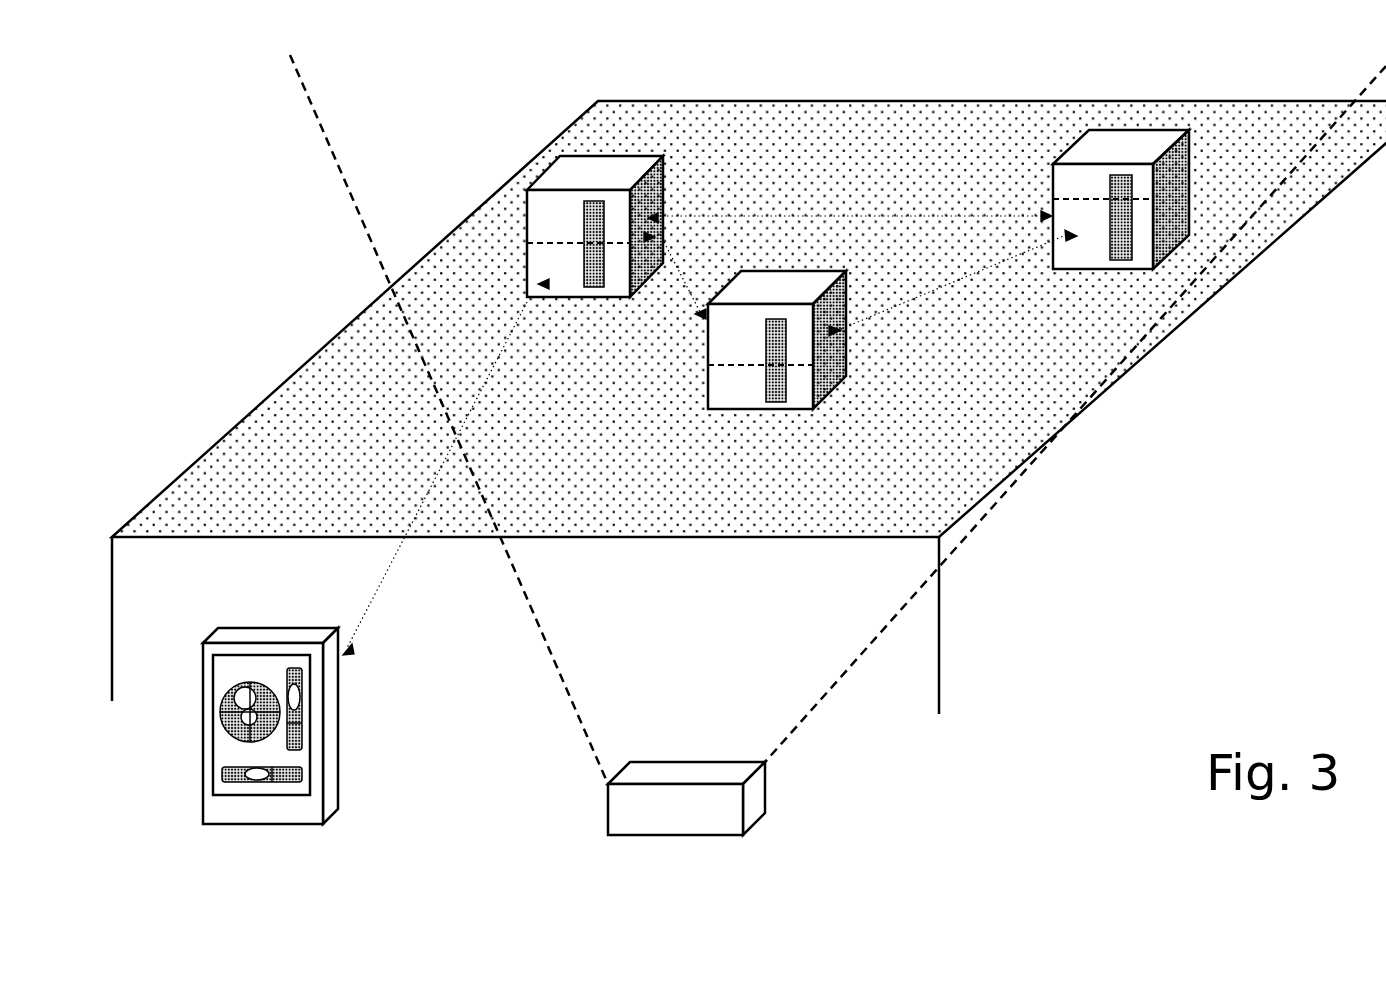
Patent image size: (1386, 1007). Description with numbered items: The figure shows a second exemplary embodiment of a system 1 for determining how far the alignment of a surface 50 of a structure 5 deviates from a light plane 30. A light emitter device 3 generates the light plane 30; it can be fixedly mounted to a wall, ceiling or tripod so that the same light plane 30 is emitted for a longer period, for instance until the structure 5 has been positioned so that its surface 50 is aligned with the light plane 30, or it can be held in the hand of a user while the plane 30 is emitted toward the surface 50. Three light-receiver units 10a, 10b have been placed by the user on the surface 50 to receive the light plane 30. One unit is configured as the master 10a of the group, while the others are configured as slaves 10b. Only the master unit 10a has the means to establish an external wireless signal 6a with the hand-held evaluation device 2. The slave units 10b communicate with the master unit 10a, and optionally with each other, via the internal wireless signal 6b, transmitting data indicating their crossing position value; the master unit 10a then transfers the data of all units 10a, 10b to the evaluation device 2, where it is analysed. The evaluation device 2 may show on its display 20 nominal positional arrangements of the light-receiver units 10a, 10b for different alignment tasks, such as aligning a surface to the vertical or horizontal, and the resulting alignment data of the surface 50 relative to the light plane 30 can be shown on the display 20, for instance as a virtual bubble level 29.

The system 1 is at (1103, 659).
The hand-held evaluation device 2 is at (231, 748).
The light emitter device 3 is at (967, 450).
The structure 5 is at (575, 636).
The external wireless signal 6a is at (435, 478).
The internal wireless signal 6b is at (939, 227).
The master light-receiver unit 10a is at (556, 207).
The slave light-receiver units 10b is at (1024, 324).
The display 20 is at (223, 712).
The virtual bubble level 29 is at (341, 733).
The light plane 30 is at (446, 419).
The surface 50 is at (744, 319).